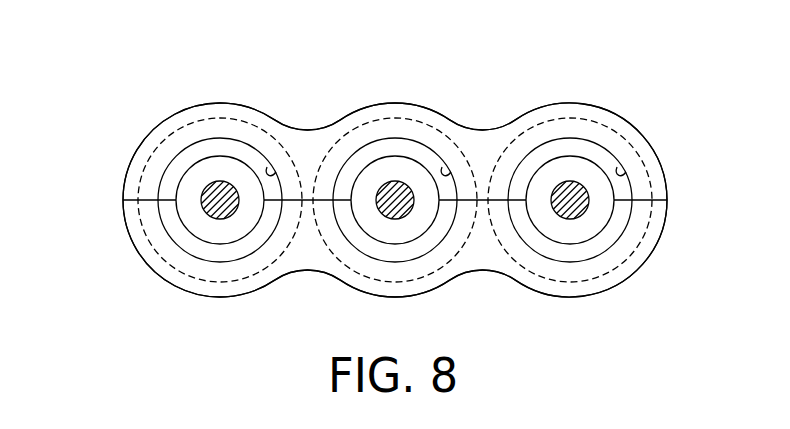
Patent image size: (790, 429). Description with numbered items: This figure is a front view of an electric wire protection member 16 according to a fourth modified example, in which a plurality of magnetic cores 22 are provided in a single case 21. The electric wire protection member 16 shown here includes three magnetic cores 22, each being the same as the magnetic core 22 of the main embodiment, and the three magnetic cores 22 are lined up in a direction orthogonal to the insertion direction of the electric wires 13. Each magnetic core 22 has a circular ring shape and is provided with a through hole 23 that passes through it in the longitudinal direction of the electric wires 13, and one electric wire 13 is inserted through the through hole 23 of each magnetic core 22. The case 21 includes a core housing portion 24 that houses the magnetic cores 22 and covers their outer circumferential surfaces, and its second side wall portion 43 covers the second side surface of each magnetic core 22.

The electric wire 13 is at (208, 186).
The electric wire protection member 16 is at (152, 128).
The case 21 is at (142, 142).
The magnetic core 22 is at (245, 155).
The through hole 23 is at (226, 157).
The core housing portion 24 is at (267, 167).
The second side wall portion 43 is at (178, 260).